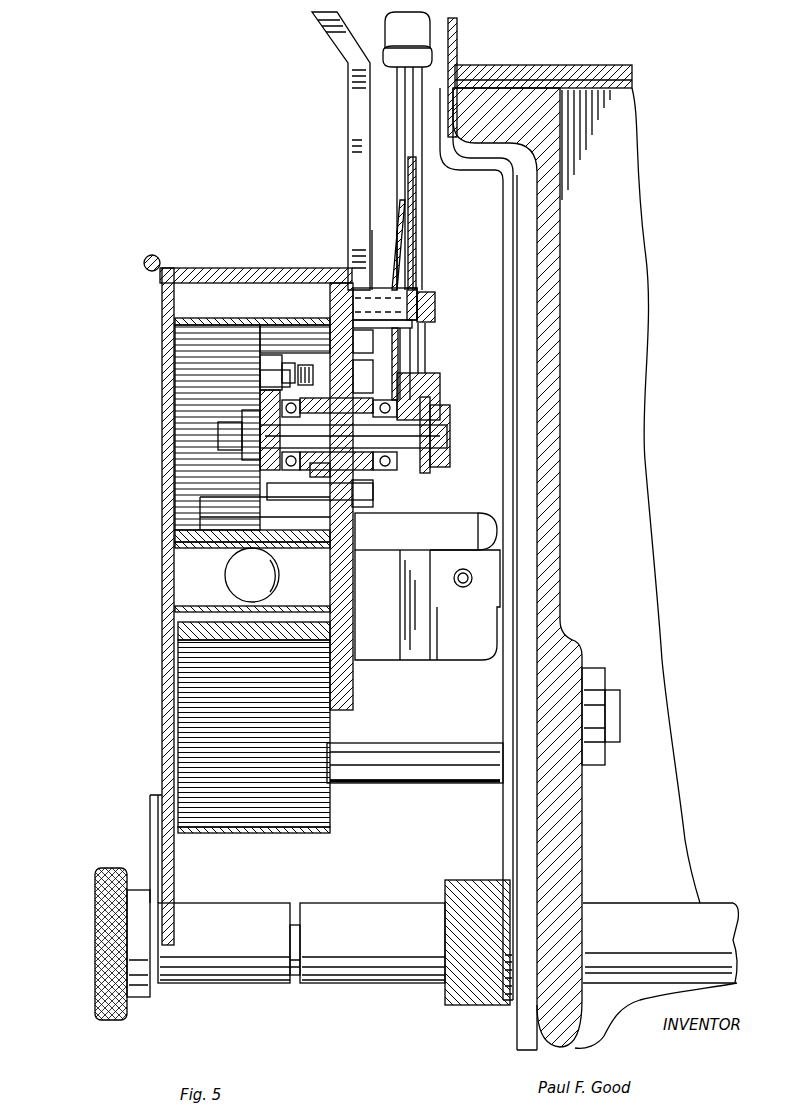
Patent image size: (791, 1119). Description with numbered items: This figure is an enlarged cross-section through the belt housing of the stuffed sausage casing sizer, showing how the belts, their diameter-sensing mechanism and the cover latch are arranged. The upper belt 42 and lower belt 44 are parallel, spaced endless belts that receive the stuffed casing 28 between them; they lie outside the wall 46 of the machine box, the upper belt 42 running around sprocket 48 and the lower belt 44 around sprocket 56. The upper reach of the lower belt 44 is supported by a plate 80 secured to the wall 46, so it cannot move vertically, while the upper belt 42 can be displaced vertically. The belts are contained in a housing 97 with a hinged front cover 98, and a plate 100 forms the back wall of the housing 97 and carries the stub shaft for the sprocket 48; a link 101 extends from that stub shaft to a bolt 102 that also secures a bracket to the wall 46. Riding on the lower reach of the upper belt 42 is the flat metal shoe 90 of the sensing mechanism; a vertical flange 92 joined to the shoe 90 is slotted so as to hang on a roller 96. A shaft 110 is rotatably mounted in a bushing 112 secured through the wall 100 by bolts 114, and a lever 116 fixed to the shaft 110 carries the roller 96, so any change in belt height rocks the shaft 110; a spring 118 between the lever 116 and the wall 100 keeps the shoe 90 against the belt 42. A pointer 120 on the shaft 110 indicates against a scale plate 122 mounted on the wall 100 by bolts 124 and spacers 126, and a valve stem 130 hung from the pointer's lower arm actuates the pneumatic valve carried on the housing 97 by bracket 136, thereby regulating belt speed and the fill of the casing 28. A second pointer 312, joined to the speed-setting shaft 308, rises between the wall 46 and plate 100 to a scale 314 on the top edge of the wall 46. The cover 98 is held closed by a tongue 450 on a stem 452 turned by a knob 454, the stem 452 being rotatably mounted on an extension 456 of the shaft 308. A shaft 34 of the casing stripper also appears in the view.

The stuffed casing 28 is at (280, 582).
The shaft 34 is at (472, 578).
The upper belt 42 is at (232, 318).
The lower belt 44 is at (190, 607).
The wall 46 is at (556, 372).
The sprocket 48 is at (185, 465).
The sprocket 56 is at (185, 729).
The plate 80 is at (178, 628).
The shoe 90 is at (177, 532).
The vertical flange 92 is at (250, 402).
The roller 96 is at (240, 432).
The housing 97 is at (262, 268).
The hinged front cover 98 is at (165, 393).
The plate 100 is at (347, 283).
The link 101 is at (440, 640).
The bolt 102 is at (387, 767).
The shaft 110 is at (440, 432).
The bushing 112 is at (412, 405).
The bolts 114 is at (375, 375).
The lever 116 is at (245, 365).
The spring 118 is at (312, 370).
The pointer 120 is at (395, 230).
The scale plate 122 is at (416, 190).
The bolts 124 is at (437, 302).
The spacers 126 is at (383, 290).
The valve stem 130 is at (405, 125).
The bracket 136 is at (348, 127).
The shaft 308 is at (425, 887).
The pointer 312 is at (505, 220).
The scale 314 is at (457, 50).
The tongue 450 is at (150, 822).
The stem 452 is at (270, 903).
The knob 454 is at (100, 985).
The extension 456 is at (293, 925).